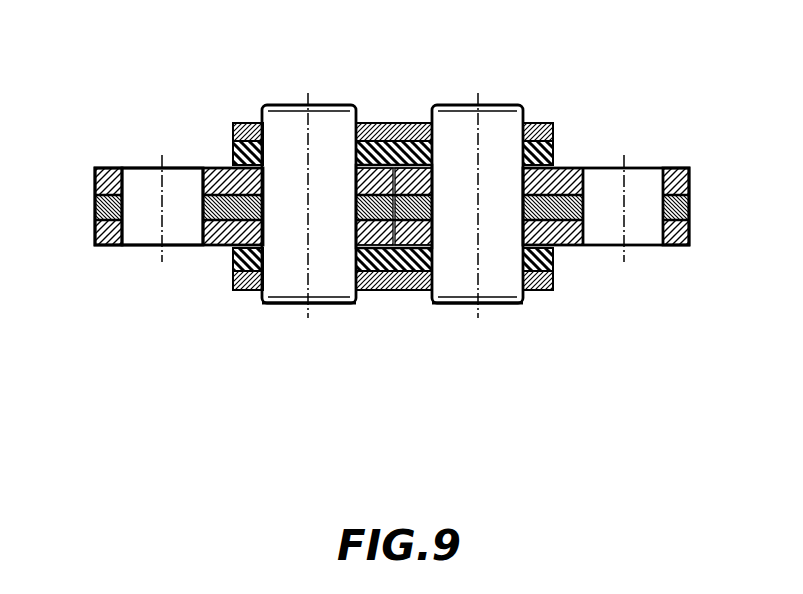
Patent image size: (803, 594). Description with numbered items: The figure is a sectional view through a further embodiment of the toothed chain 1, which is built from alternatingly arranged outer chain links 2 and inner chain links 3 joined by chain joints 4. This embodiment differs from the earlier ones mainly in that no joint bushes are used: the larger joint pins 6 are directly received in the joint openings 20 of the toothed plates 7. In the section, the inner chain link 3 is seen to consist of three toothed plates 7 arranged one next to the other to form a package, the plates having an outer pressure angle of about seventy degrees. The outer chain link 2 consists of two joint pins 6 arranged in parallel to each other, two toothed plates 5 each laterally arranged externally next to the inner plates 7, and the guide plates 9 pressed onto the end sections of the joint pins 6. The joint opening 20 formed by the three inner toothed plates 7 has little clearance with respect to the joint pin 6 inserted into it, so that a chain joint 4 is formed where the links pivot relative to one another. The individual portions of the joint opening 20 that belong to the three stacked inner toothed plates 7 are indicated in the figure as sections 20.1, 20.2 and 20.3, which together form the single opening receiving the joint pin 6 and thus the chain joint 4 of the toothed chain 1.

The toothed chain 1 is at (676, 121).
The outer chain link 2 is at (403, 120).
The inner chain link 3 is at (392, 181).
The chain joint 4 is at (333, 306).
The toothed plate 5 is at (233, 153).
The joint pin 6 is at (283, 278).
The toothed plate 7 is at (95, 185).
The guide plate 9 is at (233, 131).
The joint opening 20 is at (140, 230).
The first shaft section 20.1 is at (595, 190).
The second shaft section 20.2 is at (598, 213).
The third shaft section 20.3 is at (593, 235).